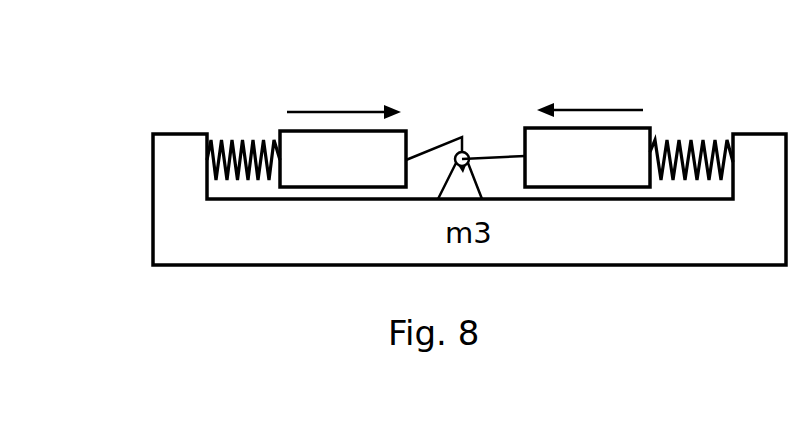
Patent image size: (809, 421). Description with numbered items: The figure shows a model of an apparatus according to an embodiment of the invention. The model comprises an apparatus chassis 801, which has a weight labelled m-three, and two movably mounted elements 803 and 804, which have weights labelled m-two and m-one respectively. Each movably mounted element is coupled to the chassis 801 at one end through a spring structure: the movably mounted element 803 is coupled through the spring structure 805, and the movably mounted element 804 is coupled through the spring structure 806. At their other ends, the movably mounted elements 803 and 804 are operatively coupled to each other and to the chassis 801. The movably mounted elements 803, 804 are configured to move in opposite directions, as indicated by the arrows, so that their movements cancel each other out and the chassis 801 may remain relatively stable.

The apparatus chassis 801 is at (633, 266).
The movably mounted element 803 is at (643, 115).
The movably mounted element 804 is at (287, 117).
The spring structure 805 is at (720, 135).
The spring structure 806 is at (227, 140).